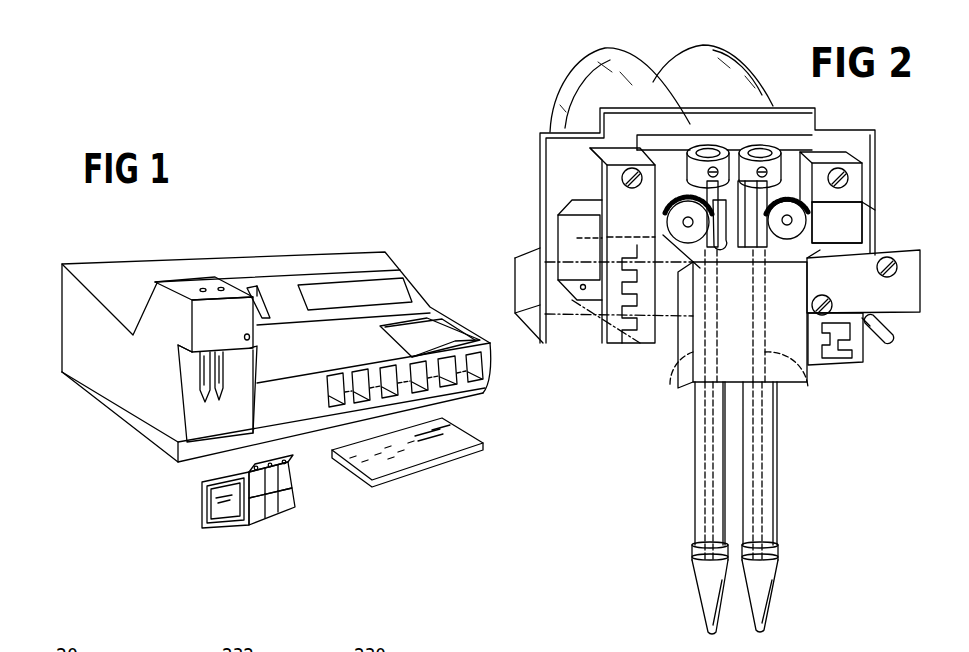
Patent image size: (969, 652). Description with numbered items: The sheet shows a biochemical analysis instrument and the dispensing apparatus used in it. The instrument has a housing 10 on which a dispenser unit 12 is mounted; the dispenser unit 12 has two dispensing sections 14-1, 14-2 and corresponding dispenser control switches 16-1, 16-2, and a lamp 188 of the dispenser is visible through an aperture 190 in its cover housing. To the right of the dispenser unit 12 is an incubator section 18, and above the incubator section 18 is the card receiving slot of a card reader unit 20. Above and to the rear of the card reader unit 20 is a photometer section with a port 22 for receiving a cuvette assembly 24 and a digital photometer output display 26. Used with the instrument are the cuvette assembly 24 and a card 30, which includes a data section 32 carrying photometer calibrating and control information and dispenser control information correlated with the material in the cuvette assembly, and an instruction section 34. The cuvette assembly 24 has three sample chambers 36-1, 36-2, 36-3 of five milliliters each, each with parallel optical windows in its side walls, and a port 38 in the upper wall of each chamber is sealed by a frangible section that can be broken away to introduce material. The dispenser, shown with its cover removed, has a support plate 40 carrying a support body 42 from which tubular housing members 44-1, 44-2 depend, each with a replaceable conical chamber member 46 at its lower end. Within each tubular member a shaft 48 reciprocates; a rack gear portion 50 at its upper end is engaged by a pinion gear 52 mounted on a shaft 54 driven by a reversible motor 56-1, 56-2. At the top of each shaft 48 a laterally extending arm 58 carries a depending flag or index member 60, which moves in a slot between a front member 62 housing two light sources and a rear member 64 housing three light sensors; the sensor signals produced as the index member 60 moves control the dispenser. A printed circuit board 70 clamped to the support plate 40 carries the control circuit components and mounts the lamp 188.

In FIG. 1, the housing 10 is at (273, 364).
In FIG. 1, the dispenser unit 12 is at (180, 325).
In FIG. 1, the dispensing section 14-1 is at (161, 377).
In FIG. 2, the dispensing section 14-1 is at (690, 520).
In FIG. 1, the dispensing section 14-2 is at (260, 376).
In FIG. 2, the dispensing section 14-2 is at (780, 517).
In FIG. 1, the dispenser control switch 16-1 is at (203, 287).
In FIG. 1, the dispenser control switch 16-2 is at (221, 287).
In FIG. 1, the incubator section 18 is at (423, 388).
In FIG. 1, the aperture 190 is at (250, 337).
In FIG. 1, the card reader unit 20 is at (430, 323).
In FIG. 1, the port 22 is at (266, 310).
In FIG. 1, the cuvette assembly 24 is at (235, 520).
In FIG. 1, the digital photometer output display 26 is at (355, 266).
In FIG. 1, the card 30 is at (411, 471).
In FIG. 1, the data section 32 is at (382, 463).
In FIG. 1, the instruction section 34 is at (452, 450).
In FIG. 1, the sample chamber 36-1 is at (258, 510).
In FIG. 1, the sample chamber 36-2 is at (272, 508).
In FIG. 1, the sample chamber 36-3 is at (287, 503).
In FIG. 1, the port 38 is at (247, 468).
In FIG. 2, the support plate 40 is at (735, 145).
In FIG. 2, the support body 42 is at (709, 333).
In FIG. 2, the tubular housing member 44-1 is at (677, 471).
In FIG. 2, the tubular housing member 44-2 is at (791, 471).
In FIG. 2, the conical chamber member 46 is at (700, 612).
In FIG. 2, the shaft 48 is at (745, 384).
In FIG. 2, the rack gear portion 50 is at (724, 149).
In FIG. 2, the pinion gear 52 is at (684, 195).
In FIG. 2, the shaft 54 is at (690, 229).
In FIG. 2, the reversible motor 56-1 is at (580, 62).
In FIG. 2, the reversible motor 56-2 is at (700, 53).
In FIG. 2, the laterally extending arm 58 is at (632, 147).
In FIG. 2, the flag or index member 60 is at (731, 202).
In FIG. 2, the front member 62 is at (722, 298).
In FIG. 2, the rear member 64 is at (710, 249).
In FIG. 2, the printed circuit board 70 is at (676, 225).
In FIG. 2, the lamp 188 is at (886, 343).